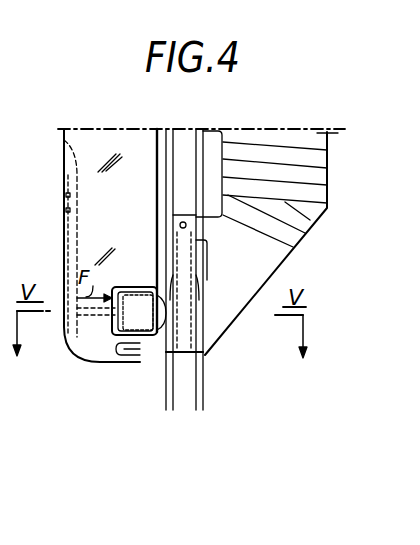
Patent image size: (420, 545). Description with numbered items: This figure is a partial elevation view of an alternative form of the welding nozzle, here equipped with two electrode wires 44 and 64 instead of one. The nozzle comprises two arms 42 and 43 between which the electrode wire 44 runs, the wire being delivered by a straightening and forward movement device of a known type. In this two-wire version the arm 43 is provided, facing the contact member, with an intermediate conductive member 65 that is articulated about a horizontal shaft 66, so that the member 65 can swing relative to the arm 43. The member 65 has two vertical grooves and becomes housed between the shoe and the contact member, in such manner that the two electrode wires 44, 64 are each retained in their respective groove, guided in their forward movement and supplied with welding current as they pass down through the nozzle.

The arm 42 is at (105, 137).
The arm 43 is at (318, 177).
The electrode wire 44 is at (202, 410).
The electrode wire 64 is at (165, 412).
The intermediate conductive member 65 is at (206, 357).
The horizontal shaft 66 is at (178, 224).